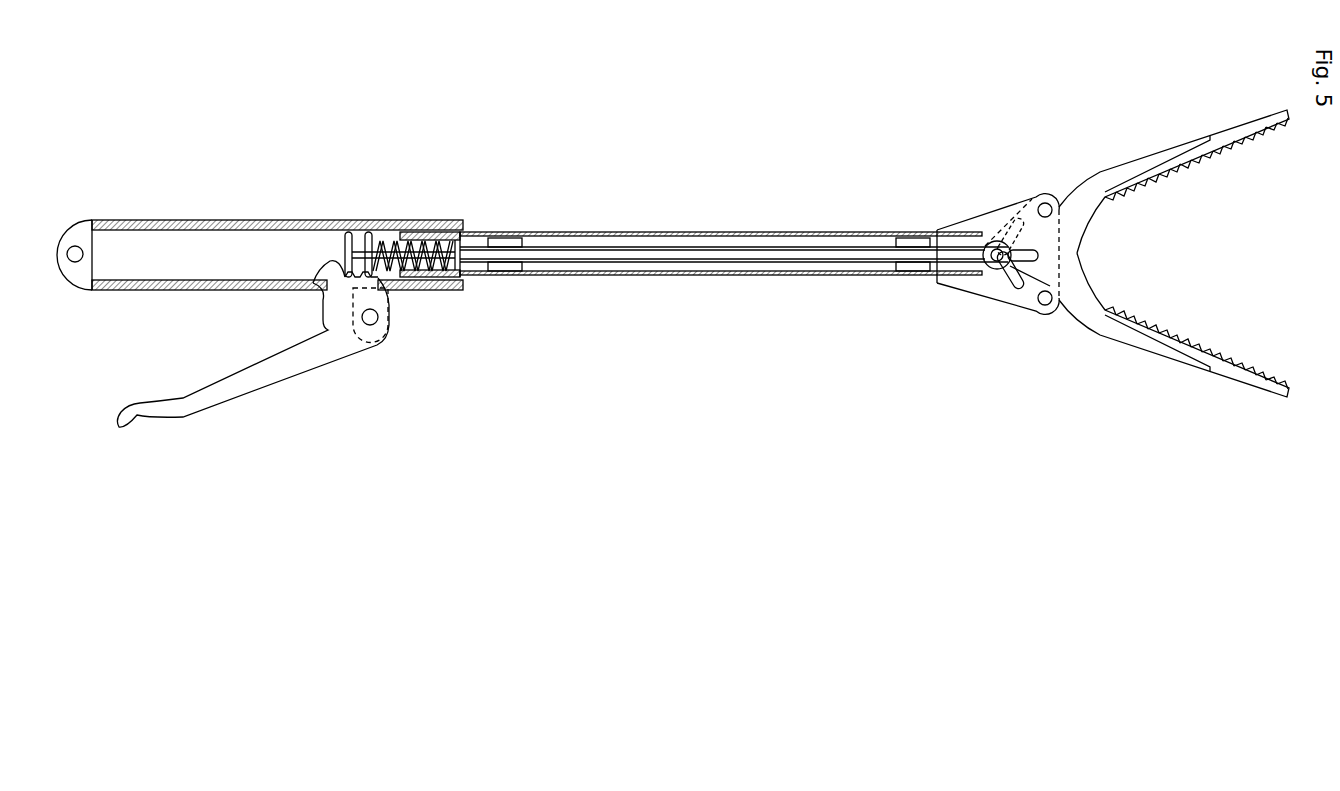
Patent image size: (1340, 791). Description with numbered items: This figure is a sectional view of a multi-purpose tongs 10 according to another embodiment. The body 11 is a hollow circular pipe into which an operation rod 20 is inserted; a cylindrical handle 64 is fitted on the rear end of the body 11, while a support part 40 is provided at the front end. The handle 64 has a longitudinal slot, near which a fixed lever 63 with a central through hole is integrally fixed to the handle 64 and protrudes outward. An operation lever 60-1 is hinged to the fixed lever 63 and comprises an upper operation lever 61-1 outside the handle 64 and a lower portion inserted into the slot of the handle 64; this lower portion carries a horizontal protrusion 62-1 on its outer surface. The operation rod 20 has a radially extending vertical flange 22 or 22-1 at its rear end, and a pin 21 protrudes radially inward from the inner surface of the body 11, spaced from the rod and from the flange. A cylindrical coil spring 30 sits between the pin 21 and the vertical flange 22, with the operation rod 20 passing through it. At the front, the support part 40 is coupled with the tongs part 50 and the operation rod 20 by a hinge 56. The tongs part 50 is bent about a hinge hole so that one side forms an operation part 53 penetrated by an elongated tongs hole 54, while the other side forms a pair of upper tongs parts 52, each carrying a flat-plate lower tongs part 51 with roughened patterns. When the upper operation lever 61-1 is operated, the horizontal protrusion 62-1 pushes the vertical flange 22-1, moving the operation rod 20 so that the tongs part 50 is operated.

The multi-purpose tongs 10 is at (789, 293).
The body 11 is at (648, 275).
The operation rod 20 is at (728, 275).
The pin 21 is at (457, 240).
The vertical flange 22 is at (346, 232).
The vertical flange 22-1 is at (368, 235).
The spring 30 is at (386, 240).
The support part 40 is at (962, 285).
The tongs part 50 is at (1130, 375).
The lower tongs part 51 is at (1235, 378).
The upper tongs part 52 is at (1115, 173).
The operation part 53 is at (1026, 300).
The elongated tongs hole 54 is at (1004, 272).
The hinge 56 is at (993, 242).
The operation lever 60-1 is at (162, 437).
The upper operation lever 61-1 is at (307, 363).
The horizontal protrusion 62-1 is at (313, 283).
The fixed lever 63 is at (385, 302).
The handle 64 is at (222, 222).